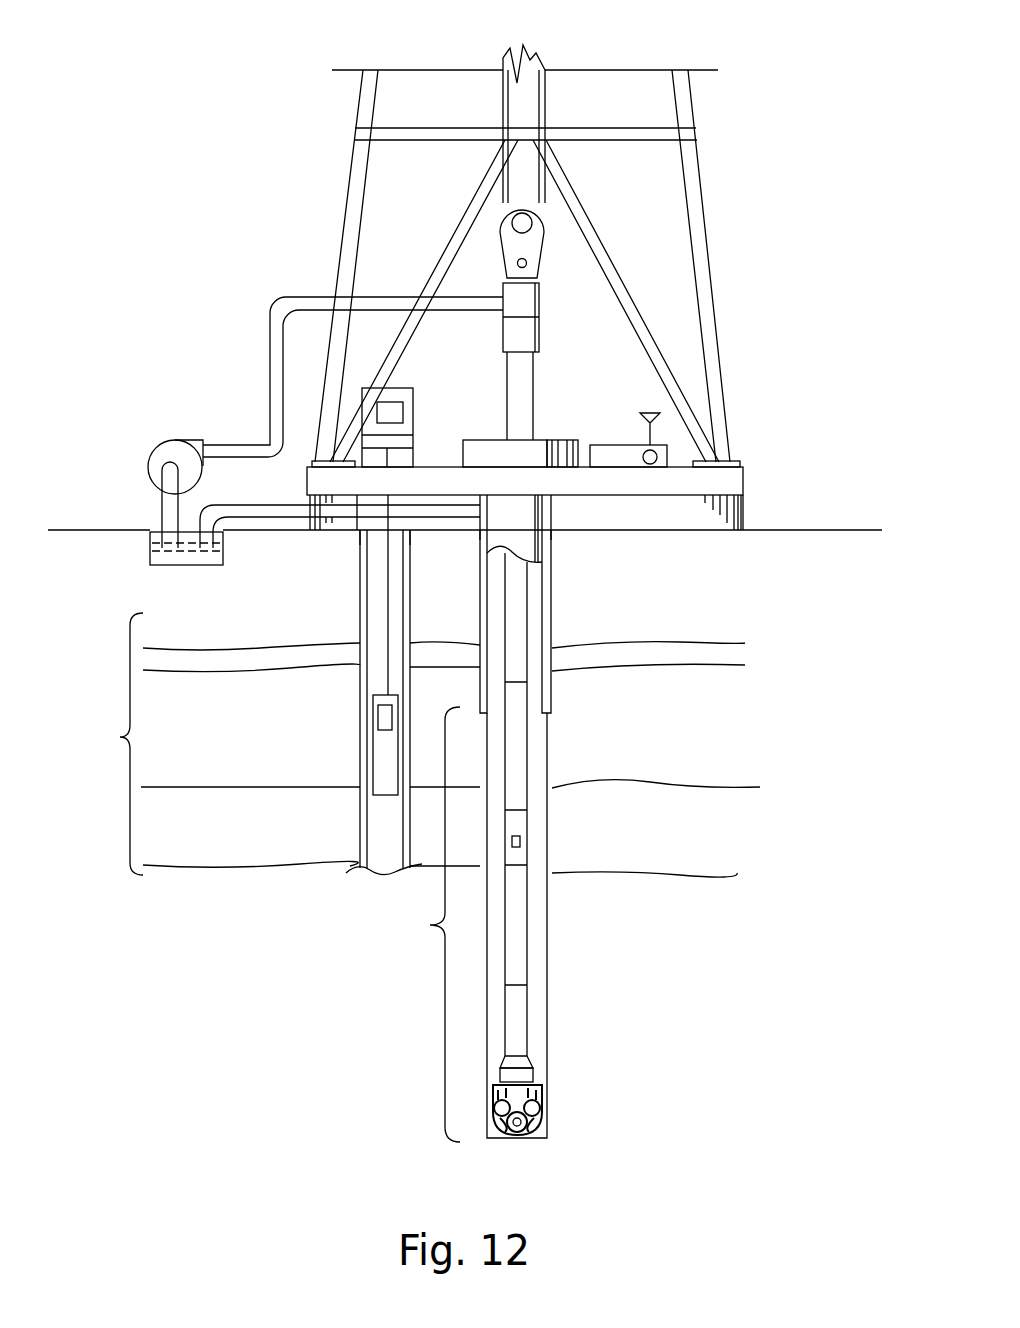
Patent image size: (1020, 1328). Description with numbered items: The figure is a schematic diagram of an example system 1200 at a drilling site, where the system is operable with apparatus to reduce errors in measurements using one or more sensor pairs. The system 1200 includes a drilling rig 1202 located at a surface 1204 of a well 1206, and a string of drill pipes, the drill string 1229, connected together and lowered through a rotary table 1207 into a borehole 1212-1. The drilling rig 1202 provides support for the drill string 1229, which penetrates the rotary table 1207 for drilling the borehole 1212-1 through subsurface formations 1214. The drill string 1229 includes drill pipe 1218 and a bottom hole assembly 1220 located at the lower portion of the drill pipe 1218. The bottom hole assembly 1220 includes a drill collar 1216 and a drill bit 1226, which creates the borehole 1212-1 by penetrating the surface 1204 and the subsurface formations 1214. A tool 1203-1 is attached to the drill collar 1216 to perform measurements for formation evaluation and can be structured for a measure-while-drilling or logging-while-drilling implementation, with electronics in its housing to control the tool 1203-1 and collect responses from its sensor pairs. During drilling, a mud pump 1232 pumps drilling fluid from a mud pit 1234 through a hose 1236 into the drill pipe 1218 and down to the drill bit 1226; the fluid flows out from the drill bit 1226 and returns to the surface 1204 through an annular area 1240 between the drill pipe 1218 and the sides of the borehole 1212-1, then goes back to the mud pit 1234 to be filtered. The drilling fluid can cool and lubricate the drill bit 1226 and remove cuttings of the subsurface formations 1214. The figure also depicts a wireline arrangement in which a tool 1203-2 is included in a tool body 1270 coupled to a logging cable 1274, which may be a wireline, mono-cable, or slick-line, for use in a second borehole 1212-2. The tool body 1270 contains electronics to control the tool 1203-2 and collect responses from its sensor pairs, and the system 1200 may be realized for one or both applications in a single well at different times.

The system 1200 is at (249, 100).
The drilling rig 1202 is at (699, 146).
The surface 1204 is at (762, 530).
The well 1206 is at (565, 528).
The rotary table 1207 is at (493, 438).
The borehole 1212-1 is at (540, 650).
The borehole 1212-2 is at (360, 638).
The subsurface formations 1214 is at (409, 745).
The drill collar 1216 is at (518, 822).
The drill pipe 1218 is at (530, 727).
The bottom hole assembly 1220 is at (415, 924).
The drill bit 1226 is at (537, 1098).
The drill string 1229 is at (532, 590).
The mud pump 1232 is at (178, 443).
The mud pit 1234 is at (157, 538).
The hose 1236 is at (270, 380).
The annular area 1240 is at (537, 765).
The tool body 1270 is at (370, 752).
The logging cable 1274 is at (385, 612).
The tool 1203-1 is at (523, 842).
The tool 1203-2 is at (383, 713).